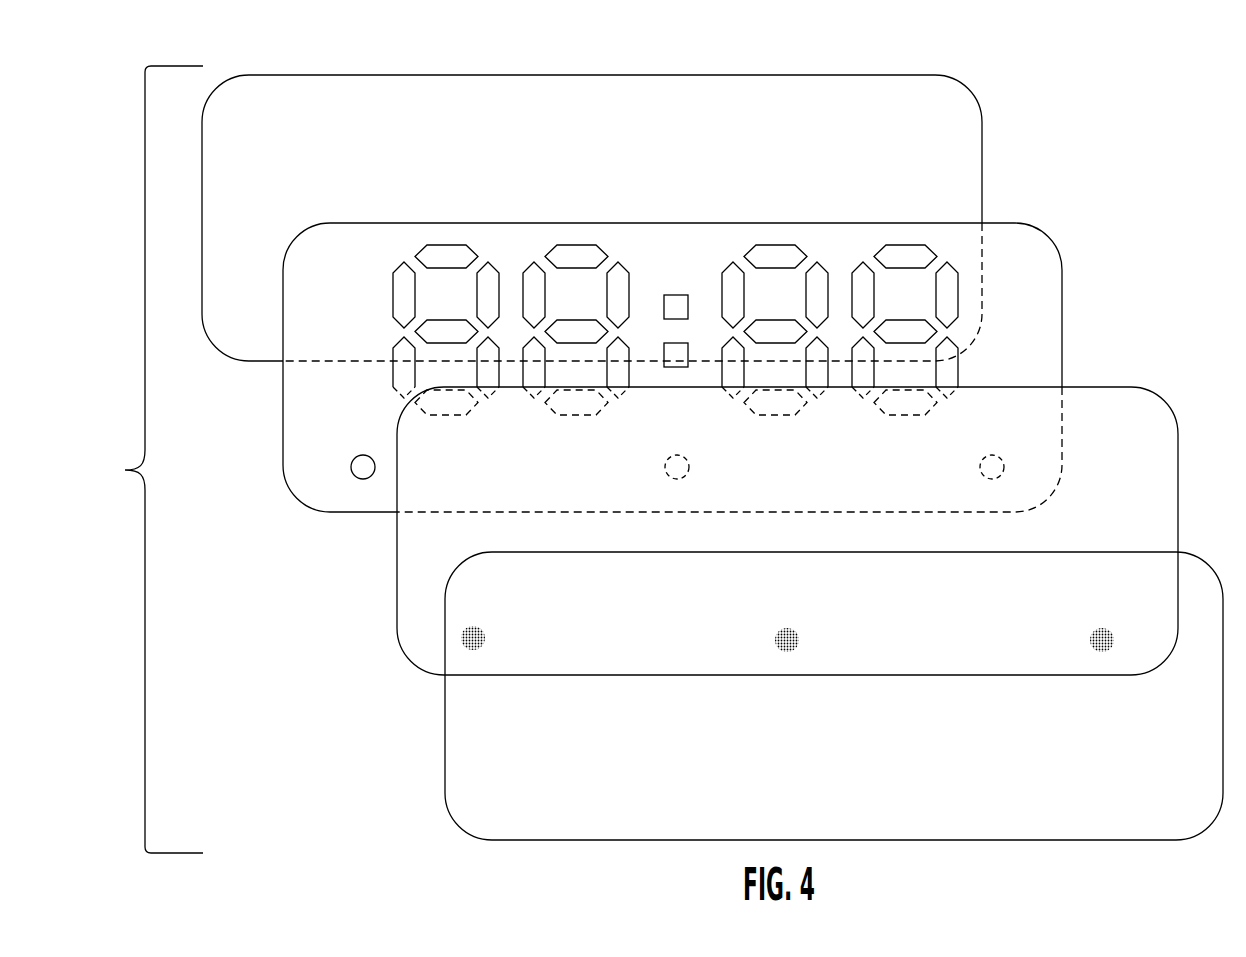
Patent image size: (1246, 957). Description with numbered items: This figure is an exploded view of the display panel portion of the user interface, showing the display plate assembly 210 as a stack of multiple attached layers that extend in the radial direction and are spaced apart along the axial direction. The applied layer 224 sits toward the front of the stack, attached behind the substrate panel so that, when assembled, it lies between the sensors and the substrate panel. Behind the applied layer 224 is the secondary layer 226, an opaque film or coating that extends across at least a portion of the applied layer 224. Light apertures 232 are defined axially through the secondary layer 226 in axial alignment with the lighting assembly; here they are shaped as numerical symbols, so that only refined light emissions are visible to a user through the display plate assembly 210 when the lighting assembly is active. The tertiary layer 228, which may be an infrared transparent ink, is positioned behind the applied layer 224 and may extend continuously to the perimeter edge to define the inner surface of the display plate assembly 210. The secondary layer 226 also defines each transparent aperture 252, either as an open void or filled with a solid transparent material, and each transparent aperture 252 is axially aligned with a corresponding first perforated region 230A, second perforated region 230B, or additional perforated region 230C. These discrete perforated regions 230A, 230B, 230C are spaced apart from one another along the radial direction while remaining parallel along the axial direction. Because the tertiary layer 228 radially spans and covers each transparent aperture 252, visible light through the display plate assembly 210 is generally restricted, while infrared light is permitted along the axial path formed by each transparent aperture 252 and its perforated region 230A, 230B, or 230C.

The display plate assembly 210 is at (140, 459).
The applied layer 224 is at (1167, 410).
The secondary layer 226 is at (1057, 246).
The tertiary layer 228 is at (965, 90).
The first perforated region 230A is at (471, 652).
The second perforated region 230B is at (799, 637).
The additional perforated region 230C is at (1115, 639).
The light apertures 232 is at (388, 282).
The transparent aperture 252 is at (358, 482).